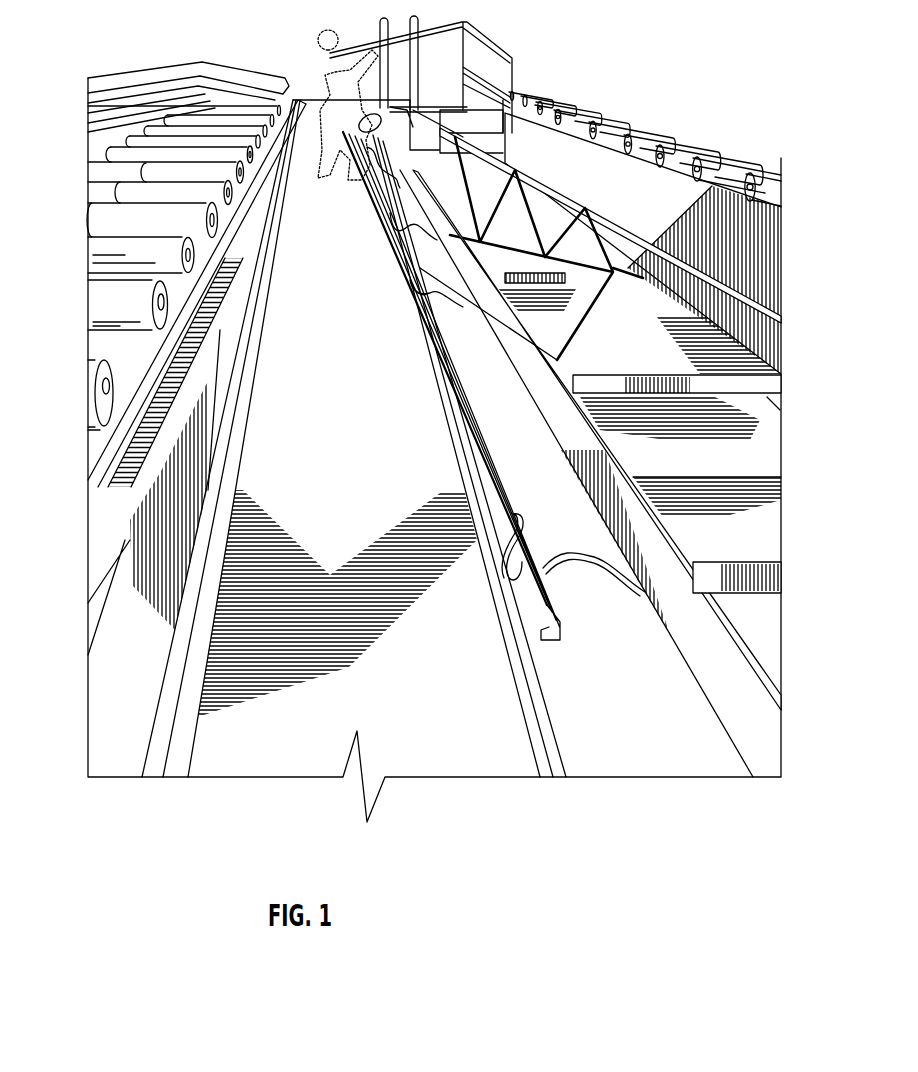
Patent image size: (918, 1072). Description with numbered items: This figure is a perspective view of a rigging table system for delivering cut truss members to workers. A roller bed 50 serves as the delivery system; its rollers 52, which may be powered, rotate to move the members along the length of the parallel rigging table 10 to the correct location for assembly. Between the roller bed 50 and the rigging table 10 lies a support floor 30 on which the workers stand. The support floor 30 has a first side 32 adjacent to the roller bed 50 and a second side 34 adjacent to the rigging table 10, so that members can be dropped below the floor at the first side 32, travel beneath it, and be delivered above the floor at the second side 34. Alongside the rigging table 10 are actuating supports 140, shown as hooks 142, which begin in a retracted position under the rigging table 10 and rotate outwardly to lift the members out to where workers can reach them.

The rigging table 10 is at (790, 600).
The support floor 30 is at (337, 316).
The first side 32 is at (260, 417).
The second side 34 is at (447, 457).
The roller bed 50 is at (76, 260).
The rollers 52 is at (97, 170).
The actuating support 140 is at (628, 600).
The hooks 142 is at (450, 300).